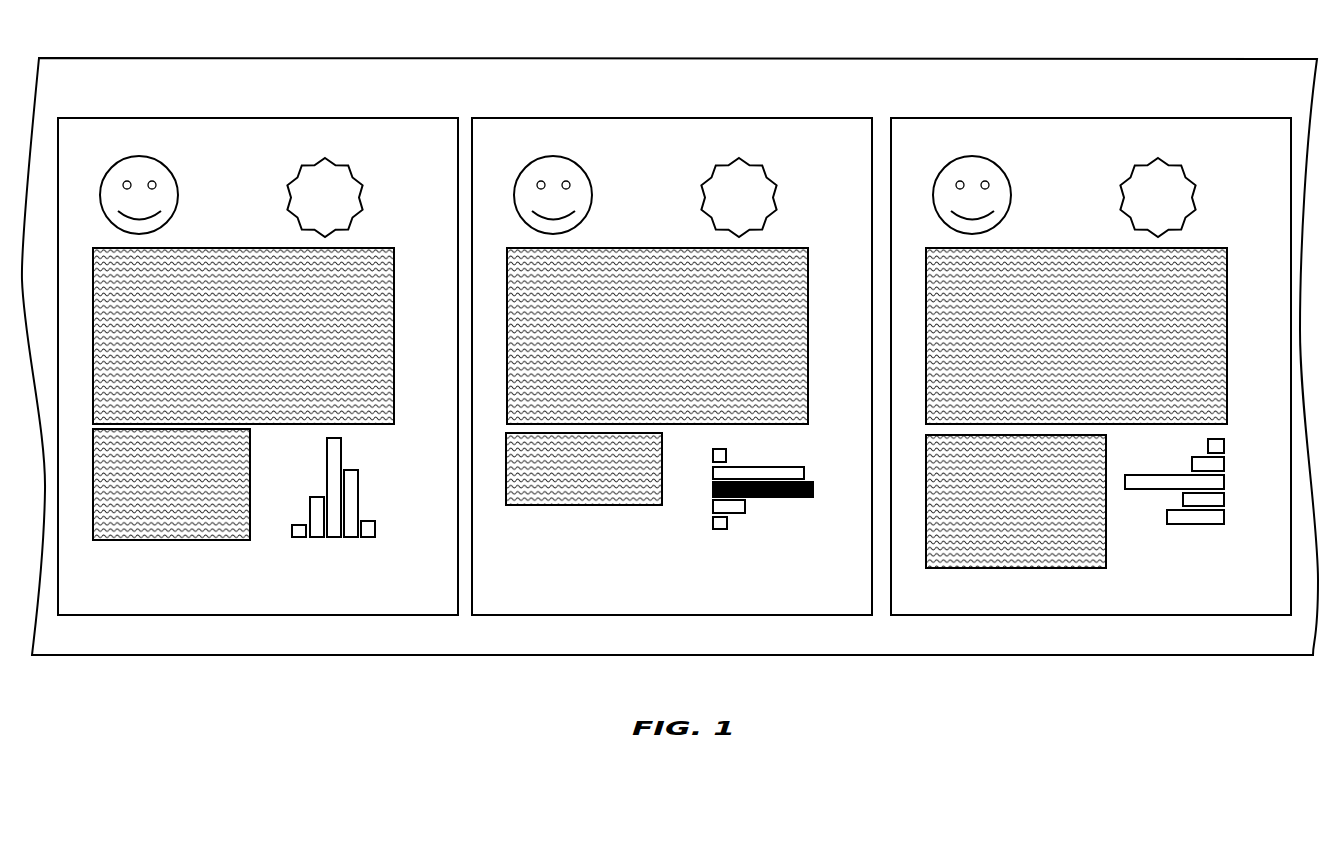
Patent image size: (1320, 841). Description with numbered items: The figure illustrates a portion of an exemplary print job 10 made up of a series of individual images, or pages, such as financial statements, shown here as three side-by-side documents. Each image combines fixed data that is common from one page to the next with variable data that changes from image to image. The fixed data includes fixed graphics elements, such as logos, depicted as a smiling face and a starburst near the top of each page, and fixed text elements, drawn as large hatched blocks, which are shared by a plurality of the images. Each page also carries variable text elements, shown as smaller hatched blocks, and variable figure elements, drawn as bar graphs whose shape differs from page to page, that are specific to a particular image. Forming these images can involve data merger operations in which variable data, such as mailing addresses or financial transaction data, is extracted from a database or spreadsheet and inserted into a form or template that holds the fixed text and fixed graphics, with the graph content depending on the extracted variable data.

The print job 10 is at (147, 58).